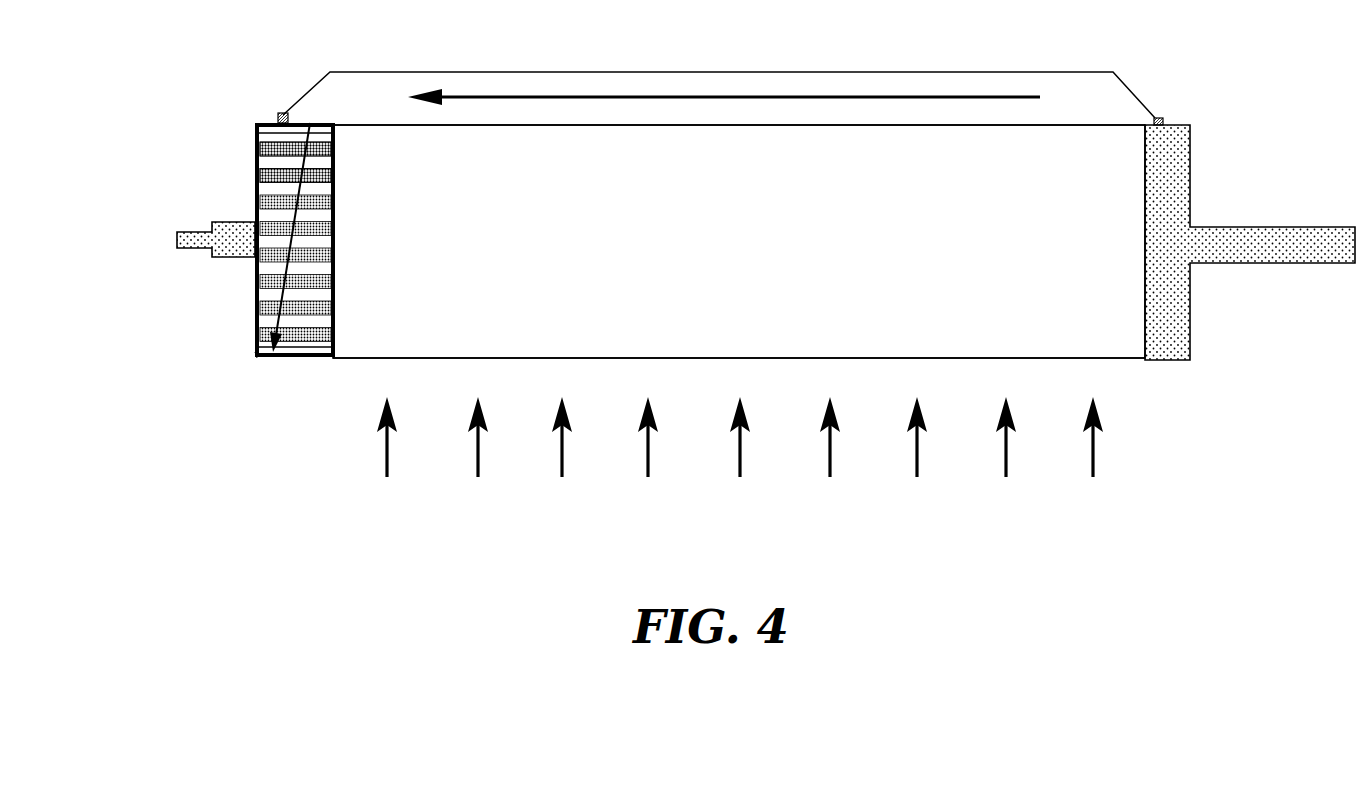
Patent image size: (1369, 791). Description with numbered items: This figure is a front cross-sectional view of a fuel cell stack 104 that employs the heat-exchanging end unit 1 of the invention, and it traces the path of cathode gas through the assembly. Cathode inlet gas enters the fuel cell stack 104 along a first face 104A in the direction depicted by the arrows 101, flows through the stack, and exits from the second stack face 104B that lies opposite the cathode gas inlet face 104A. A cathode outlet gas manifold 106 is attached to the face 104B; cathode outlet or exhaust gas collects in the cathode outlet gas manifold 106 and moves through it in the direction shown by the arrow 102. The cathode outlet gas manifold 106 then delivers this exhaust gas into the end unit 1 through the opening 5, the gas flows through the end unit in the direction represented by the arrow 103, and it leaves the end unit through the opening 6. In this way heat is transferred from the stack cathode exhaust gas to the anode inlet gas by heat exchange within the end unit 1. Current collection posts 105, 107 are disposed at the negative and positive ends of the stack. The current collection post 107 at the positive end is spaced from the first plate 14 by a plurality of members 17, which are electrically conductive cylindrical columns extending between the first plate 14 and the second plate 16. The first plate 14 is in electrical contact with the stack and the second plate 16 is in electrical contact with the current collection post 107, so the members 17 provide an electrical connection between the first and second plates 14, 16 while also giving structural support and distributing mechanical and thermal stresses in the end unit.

The end unit 1 is at (250, 368).
The opening 5 is at (307, 125).
The opening 6 is at (275, 357).
The first plate 14 is at (333, 328).
The second plate 16 is at (258, 190).
The members 17 is at (265, 162).
The arrows 101 is at (743, 458).
The arrow 102 is at (812, 97).
The arrow 103 is at (312, 162).
The fuel cell stack 104 is at (1097, 173).
The first face 104A is at (963, 358).
The second stack face 104B is at (572, 125).
The current collection post 105 is at (1178, 203).
The cathode outlet gas manifold 106 is at (355, 93).
The current collection post 107 is at (222, 257).